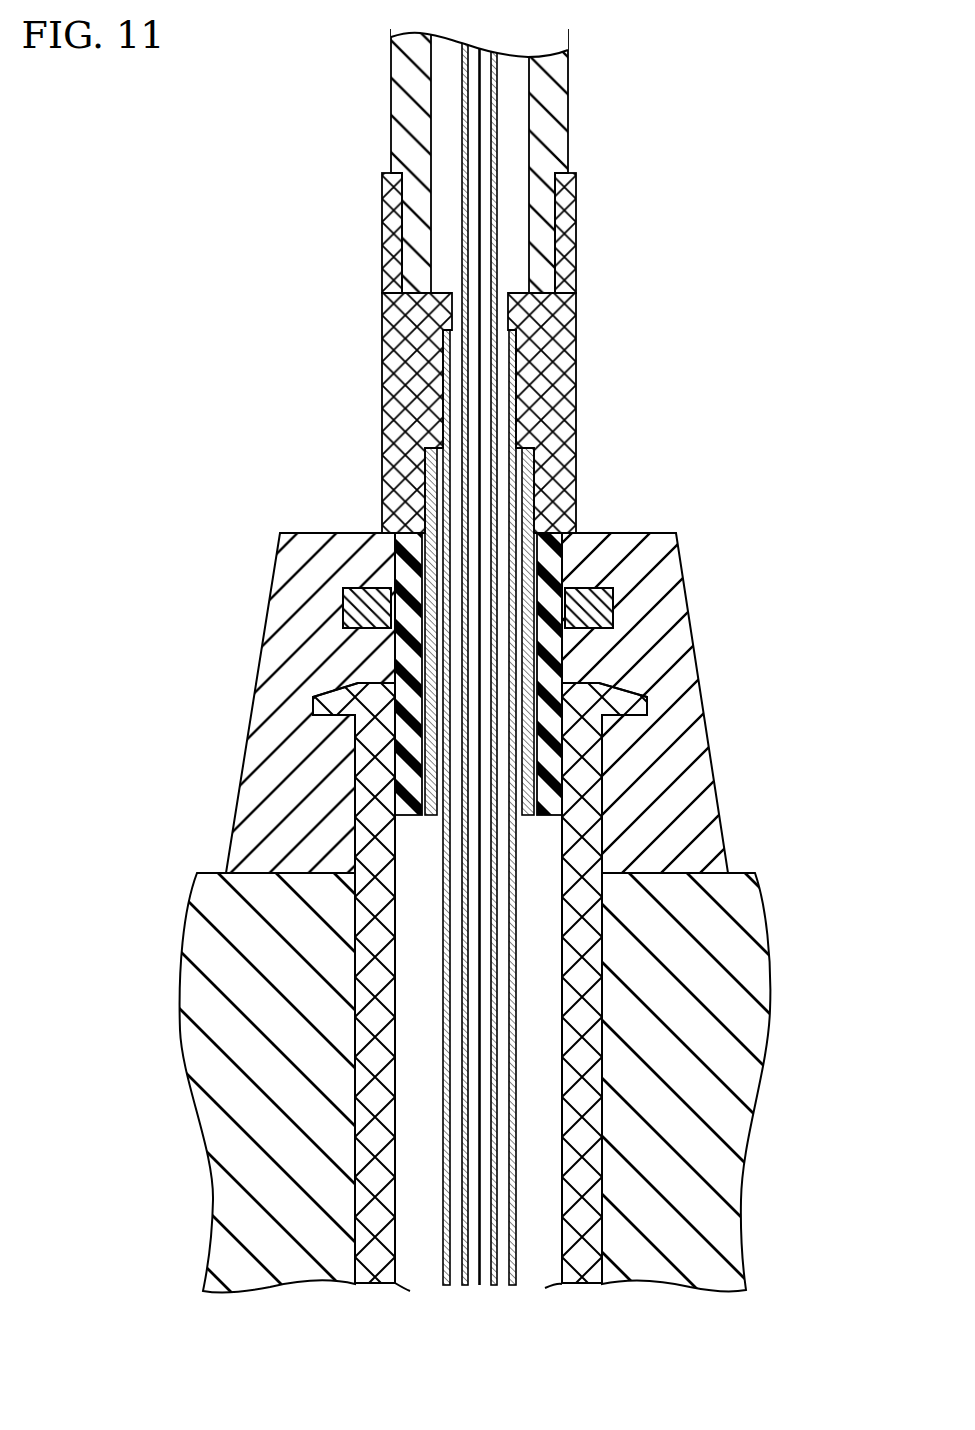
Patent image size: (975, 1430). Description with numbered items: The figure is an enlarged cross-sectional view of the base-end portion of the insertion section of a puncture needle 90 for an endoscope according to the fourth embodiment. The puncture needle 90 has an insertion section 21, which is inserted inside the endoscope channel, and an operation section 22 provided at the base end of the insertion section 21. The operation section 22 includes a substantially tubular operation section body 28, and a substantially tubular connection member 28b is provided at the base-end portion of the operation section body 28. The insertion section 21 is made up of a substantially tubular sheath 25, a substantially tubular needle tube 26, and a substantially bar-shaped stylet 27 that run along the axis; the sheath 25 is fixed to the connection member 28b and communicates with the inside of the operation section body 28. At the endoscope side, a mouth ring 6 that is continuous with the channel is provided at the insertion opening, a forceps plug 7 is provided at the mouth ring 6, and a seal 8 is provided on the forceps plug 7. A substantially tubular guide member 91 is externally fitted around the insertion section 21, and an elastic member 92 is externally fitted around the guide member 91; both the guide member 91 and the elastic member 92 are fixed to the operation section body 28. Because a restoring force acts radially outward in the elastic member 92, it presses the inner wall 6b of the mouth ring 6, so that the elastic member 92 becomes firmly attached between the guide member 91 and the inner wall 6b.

The operation section 22 is at (569, 87).
The operation section body 28 is at (569, 137).
The connection member 28b is at (577, 350).
The needle tube 26 is at (496, 167).
The stylet 27 is at (479, 249).
The sheath 25 is at (511, 1203).
The guide member 91 is at (530, 468).
The elastic member 92 is at (556, 555).
The forceps plug 7 is at (677, 650).
The seal 8 is at (616, 615).
The mouth ring 6 is at (586, 748).
The inner wall 6b is at (395, 888).
The insertion section 21 is at (511, 1253).
The puncture needle 90 is at (757, 93).